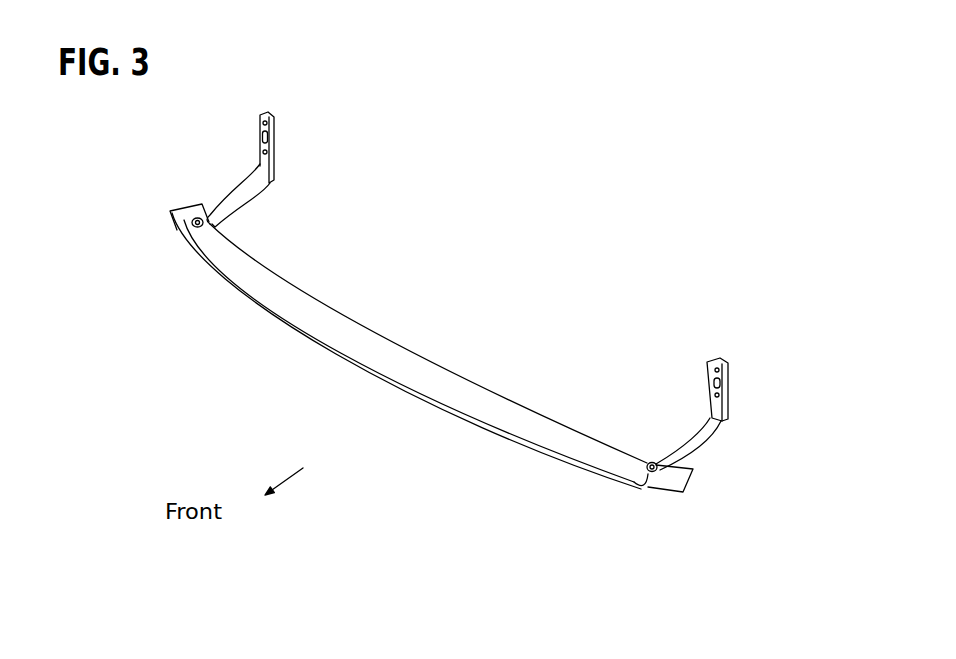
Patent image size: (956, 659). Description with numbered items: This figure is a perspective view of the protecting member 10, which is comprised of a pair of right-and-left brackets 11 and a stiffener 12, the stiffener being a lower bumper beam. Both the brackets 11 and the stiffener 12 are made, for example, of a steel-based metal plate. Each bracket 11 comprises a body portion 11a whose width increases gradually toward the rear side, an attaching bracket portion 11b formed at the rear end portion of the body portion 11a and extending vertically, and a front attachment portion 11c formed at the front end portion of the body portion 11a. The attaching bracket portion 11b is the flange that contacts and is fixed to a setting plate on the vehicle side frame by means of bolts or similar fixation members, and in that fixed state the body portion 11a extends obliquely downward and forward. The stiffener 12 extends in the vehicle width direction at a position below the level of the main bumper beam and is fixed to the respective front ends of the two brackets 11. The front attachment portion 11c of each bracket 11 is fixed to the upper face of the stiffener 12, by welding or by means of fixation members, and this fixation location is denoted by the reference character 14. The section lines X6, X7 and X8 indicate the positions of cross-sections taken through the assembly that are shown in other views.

The protecting member 10 is at (490, 264).
The bracket 11 is at (231, 189).
The body portion 11a is at (464, 317).
The attaching bracket portion 11b is at (274, 140).
The front attachment portion 11c is at (195, 217).
The stiffener 12 is at (298, 298).
The fixation portion 14 is at (192, 224).
The section line X6 is at (427, 354).
The section line X7 is at (550, 412).
The section line X8 is at (640, 453).